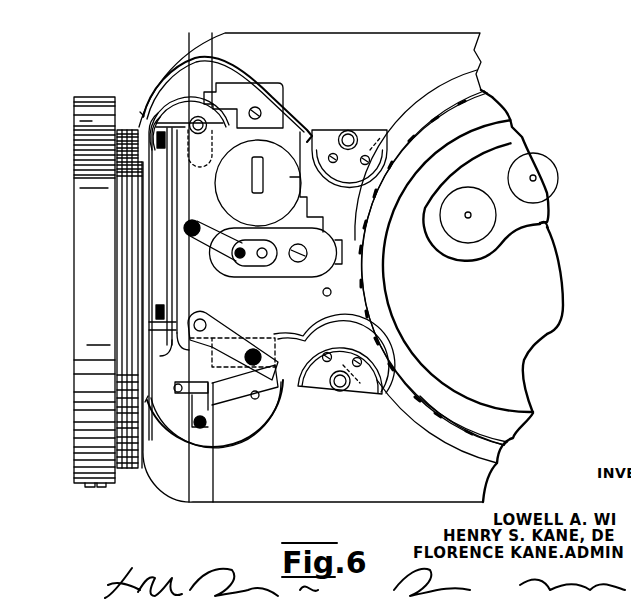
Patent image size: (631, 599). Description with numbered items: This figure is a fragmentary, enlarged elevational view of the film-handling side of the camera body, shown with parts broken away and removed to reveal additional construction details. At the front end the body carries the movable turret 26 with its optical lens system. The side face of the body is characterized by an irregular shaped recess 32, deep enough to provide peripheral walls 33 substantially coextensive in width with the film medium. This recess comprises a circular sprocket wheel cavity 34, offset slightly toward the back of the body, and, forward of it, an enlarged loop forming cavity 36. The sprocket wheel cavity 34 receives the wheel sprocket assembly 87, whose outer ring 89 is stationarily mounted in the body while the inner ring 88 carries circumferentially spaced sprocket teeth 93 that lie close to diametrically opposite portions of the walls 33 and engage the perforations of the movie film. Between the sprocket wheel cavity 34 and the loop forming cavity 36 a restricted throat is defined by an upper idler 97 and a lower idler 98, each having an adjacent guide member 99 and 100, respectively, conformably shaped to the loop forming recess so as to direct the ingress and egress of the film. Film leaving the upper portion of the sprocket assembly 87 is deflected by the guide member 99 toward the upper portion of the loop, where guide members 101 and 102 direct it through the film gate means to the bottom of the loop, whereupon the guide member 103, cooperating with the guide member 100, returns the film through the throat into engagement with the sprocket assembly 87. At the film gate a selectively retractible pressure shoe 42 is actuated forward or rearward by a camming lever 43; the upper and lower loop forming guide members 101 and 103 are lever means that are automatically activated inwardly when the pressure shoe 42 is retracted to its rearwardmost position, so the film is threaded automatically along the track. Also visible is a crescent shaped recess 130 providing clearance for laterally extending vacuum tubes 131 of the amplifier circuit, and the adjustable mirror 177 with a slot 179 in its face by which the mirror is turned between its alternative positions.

The movable turret 26 is at (93, 323).
The irregular shaped recess 32 is at (338, 199).
The peripheral walls 33 is at (410, 418).
The sprocket wheel cavity 34 is at (450, 453).
The loop forming cavity 36 is at (172, 93).
The pressure shoe 42 is at (275, 328).
The camming lever 43 is at (227, 250).
The wheel sprocket assembly 87 is at (443, 366).
The inner ring 88 is at (377, 280).
The outer ring 89 is at (410, 113).
The sprocket teeth 93 is at (380, 340).
The upper idler 97 is at (332, 140).
The lower idler 98 is at (337, 386).
The guide member 99 is at (324, 183).
The guide member 100 is at (320, 334).
The upper loop forming guide member 101 is at (176, 66).
The guide member 102 is at (160, 112).
The lower loop forming guide member 103 is at (228, 445).
The crescent shaped recess 130 is at (549, 229).
The vacuum tubes 131 is at (526, 152).
The adjustable mirror 177 is at (233, 196).
The slot 179 is at (253, 176).